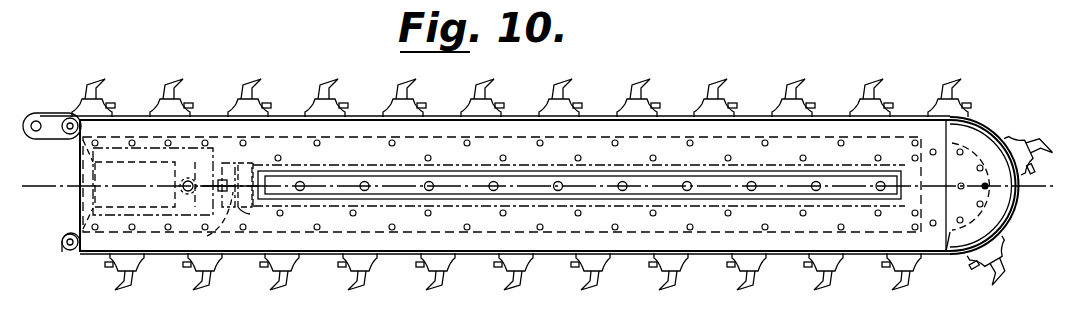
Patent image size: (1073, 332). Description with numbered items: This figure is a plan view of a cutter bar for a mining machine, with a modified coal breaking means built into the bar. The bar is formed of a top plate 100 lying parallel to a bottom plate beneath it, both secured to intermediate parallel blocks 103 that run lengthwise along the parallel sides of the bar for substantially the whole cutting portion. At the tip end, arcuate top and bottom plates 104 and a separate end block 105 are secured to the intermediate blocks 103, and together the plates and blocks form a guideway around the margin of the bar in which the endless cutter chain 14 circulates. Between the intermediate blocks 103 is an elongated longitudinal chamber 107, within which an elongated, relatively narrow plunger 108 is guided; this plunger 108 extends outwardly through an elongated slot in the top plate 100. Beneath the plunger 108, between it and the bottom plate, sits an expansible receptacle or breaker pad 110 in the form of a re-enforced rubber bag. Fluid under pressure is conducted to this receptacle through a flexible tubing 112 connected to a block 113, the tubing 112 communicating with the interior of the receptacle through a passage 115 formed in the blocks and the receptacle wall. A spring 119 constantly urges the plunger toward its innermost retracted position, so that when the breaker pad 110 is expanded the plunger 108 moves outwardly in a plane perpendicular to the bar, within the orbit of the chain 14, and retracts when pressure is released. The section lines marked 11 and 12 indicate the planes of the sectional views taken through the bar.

The top plate 100 is at (510, 125).
The endless cutter chain 14 is at (645, 105).
The intermediate parallel blocks 103 is at (735, 225).
The arcuate top and bottom plates 104 is at (967, 153).
The end block 105 is at (955, 214).
The elongated longitudinal chamber 107 is at (641, 214).
The plunger 108 is at (532, 181).
The expansible receptacle or breaker pad 110 is at (250, 214).
The flexible tubing 112 is at (184, 190).
The block 113 is at (241, 159).
The passage 115 is at (209, 223).
The spring 119 is at (257, 165).
The section line 11 is at (60, 160).
The section line 12 is at (317, 300).